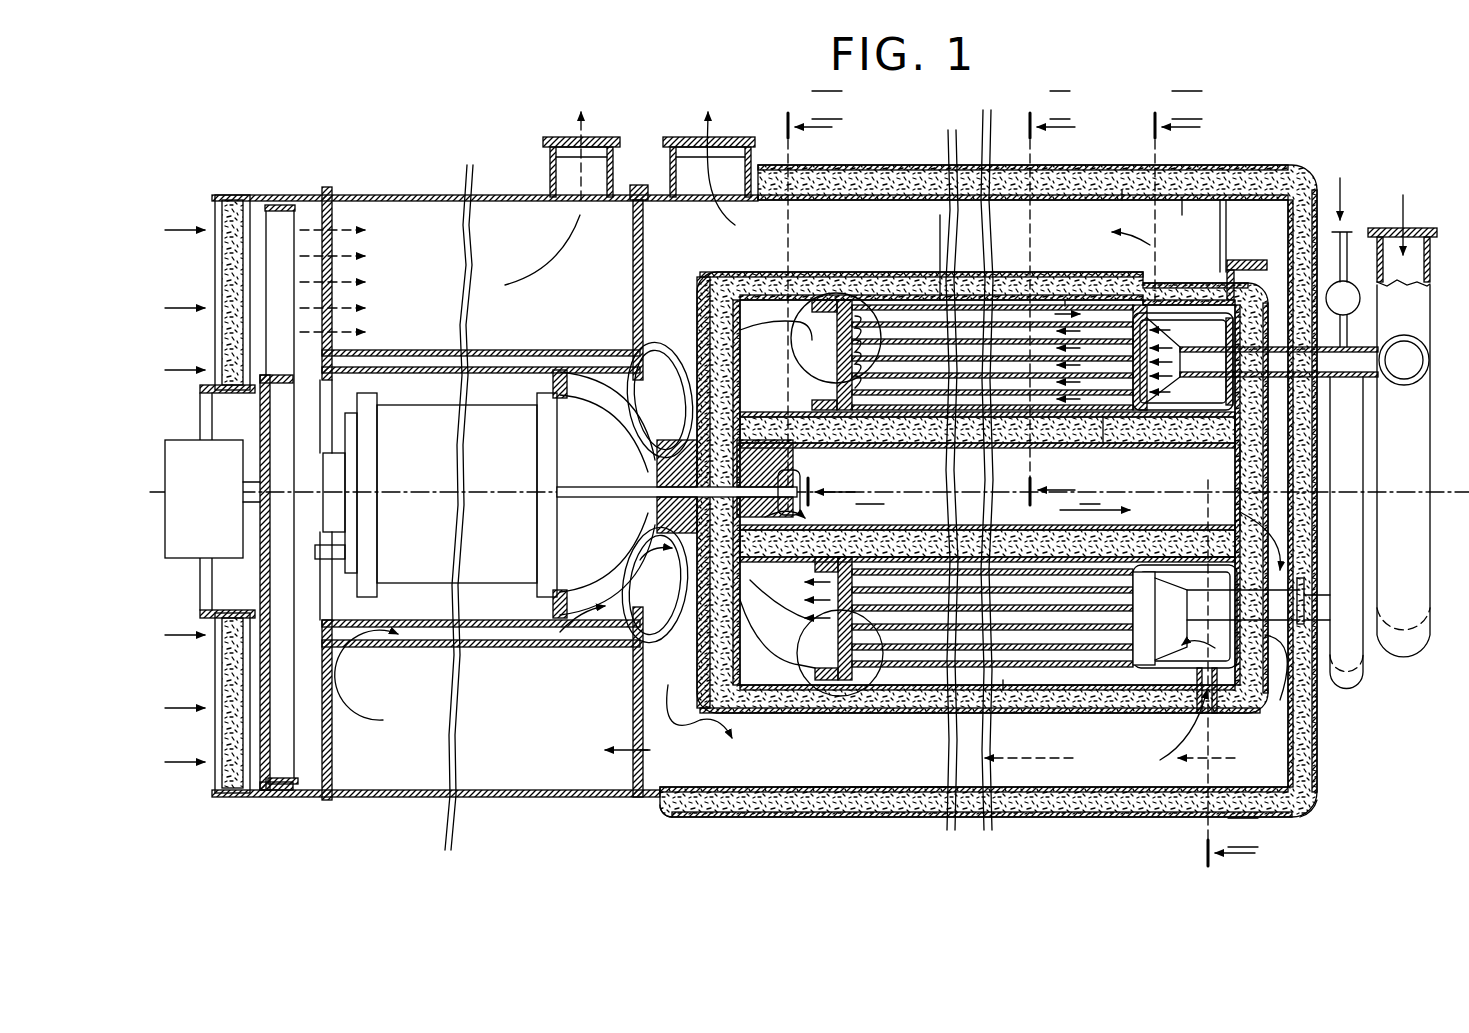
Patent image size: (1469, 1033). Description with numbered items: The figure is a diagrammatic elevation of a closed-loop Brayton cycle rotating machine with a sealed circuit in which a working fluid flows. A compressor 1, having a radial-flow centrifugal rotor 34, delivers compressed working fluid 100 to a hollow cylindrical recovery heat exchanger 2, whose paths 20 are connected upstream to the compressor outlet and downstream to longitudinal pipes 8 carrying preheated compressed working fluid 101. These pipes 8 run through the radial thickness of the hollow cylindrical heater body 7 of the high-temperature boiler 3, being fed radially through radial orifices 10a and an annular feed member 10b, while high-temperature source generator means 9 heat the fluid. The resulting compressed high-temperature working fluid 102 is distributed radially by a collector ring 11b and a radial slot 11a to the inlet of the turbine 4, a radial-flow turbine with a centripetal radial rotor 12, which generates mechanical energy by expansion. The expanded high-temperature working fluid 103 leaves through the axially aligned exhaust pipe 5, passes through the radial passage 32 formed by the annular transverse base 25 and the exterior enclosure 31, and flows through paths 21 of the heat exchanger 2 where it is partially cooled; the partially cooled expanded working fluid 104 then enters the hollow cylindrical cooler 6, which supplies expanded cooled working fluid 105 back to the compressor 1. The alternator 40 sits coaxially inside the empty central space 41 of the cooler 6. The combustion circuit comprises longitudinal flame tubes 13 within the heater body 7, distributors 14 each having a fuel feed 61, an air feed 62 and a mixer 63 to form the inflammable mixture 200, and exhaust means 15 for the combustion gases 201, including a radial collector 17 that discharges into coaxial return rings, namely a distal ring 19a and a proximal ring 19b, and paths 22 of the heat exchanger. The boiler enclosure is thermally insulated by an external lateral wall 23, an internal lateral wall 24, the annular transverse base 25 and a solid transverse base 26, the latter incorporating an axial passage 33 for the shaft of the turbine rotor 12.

The compressor 1 is at (655, 585).
The recovery heat exchanger 2 is at (1095, 772).
The high-temperature boiler 3 is at (870, 790).
The turbine 4 is at (803, 470).
The exhaust pipe 5 is at (996, 529).
The cooler 6 is at (495, 790).
The heater body 7 is at (916, 568).
The longitudinal pipes 8 is at (1070, 665).
The high-temperature source generator means 9 is at (1129, 229).
The radial orifices 10a is at (1178, 758).
The annular feed member 10b is at (1198, 655).
The radial slot 11a is at (745, 620).
The collector ring 11b is at (750, 380).
The centripetal radial rotor 12 is at (808, 518).
The longitudinal flame tubes 13 is at (1000, 300).
The distributors 14 is at (1243, 285).
The exhaust means 15 is at (942, 215).
The radial collector 17 is at (800, 378).
The distal ring 19a is at (1065, 300).
The proximal ring 19b is at (1103, 435).
The path of the first set of paths 20 is at (815, 790).
The path of the second set of paths 21 is at (672, 800).
The path of the third set of paths 22 is at (1182, 215).
The external lateral wall 23 is at (930, 765).
The internal lateral wall 24 is at (1160, 545).
The annular transverse base 25 is at (1270, 695).
The solid transverse base 26 is at (722, 290).
The exterior enclosure 31 is at (1320, 815).
The radial passage 32 is at (1280, 333).
The axial passage 33 is at (675, 440).
The radial-flow centrifugal rotor 34 is at (635, 526).
The alternator 40 is at (418, 440).
The empty central space 41 is at (475, 612).
The fuel feed 61 is at (1352, 232).
The air feed 62 is at (1425, 235).
The mixer 63 is at (1170, 385).
The compressed working fluid 100 is at (688, 745).
The preheated compressed working fluid 101 is at (1200, 705).
The compressed high-temperature working fluid 102 is at (760, 580).
The expanded high-temperature working fluid 103 is at (1252, 440).
The partially cooled expanded working fluid 104 is at (603, 760).
The expanded cooled working fluid 105 is at (360, 685).
The inflammable mixture 200 is at (1183, 300).
The combustion gases 201 is at (1122, 200).